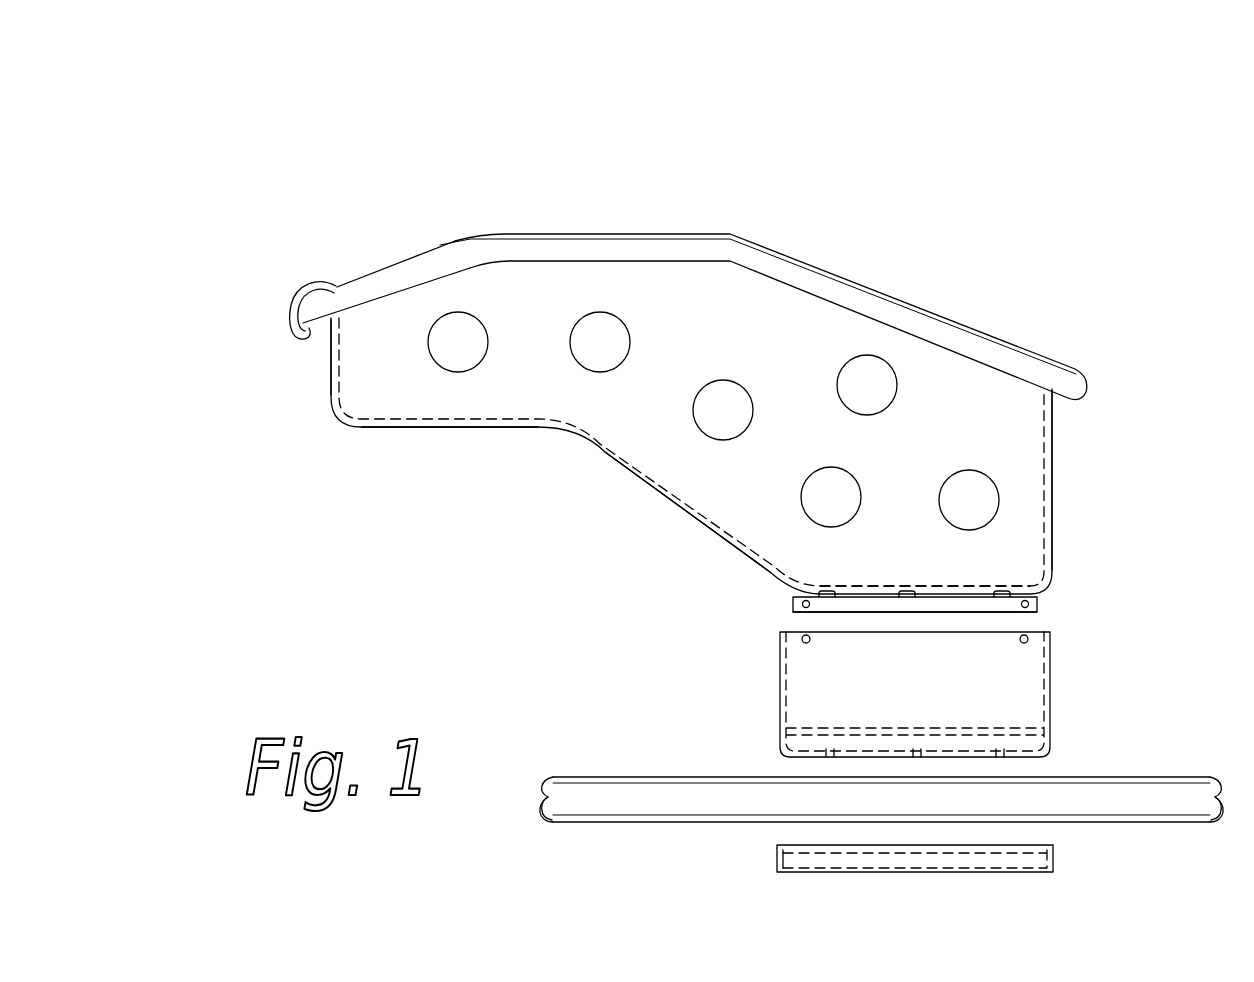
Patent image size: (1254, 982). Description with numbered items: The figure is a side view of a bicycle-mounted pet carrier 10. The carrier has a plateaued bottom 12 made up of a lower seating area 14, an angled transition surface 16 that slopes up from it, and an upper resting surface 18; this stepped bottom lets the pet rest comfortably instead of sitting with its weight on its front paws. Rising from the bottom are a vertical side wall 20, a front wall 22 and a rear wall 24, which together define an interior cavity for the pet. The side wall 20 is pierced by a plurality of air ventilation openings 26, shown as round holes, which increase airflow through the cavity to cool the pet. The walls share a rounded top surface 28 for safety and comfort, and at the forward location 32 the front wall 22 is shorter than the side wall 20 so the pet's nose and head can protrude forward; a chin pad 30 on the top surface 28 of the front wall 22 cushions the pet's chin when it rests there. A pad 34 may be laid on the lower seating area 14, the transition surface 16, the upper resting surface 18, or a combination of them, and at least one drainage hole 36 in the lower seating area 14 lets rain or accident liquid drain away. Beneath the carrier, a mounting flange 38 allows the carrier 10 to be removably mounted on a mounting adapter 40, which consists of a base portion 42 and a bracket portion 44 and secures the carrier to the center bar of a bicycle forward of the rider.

The pet carrier 10 is at (855, 170).
The plateaued bottom 12 is at (590, 525).
The lower seating area 14 is at (960, 597).
The angled transition surface 16 is at (722, 552).
The upper resting surface 18 is at (453, 428).
The side wall 20 is at (947, 387).
The front wall 22 is at (330, 363).
The rear wall 24 is at (1053, 447).
The air ventilation openings 26 is at (862, 356).
The top surface 28 is at (533, 234).
The chin pad 30 is at (288, 302).
The forward location 32 is at (340, 237).
The pad 34 is at (887, 587).
The drainage hole 36 is at (1007, 598).
The mounting flange 38 is at (907, 613).
The mounting adapter 40 is at (735, 682).
The base portion 42 is at (820, 702).
The bracket portion 44 is at (867, 858).